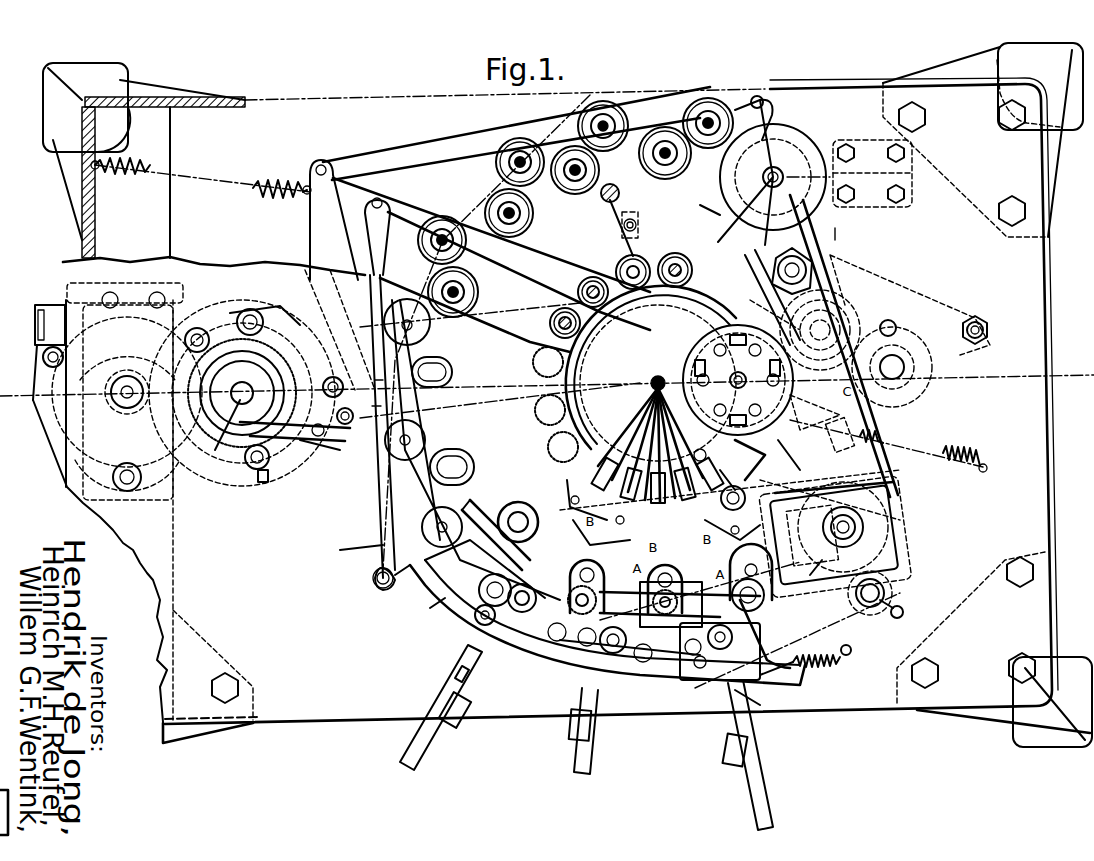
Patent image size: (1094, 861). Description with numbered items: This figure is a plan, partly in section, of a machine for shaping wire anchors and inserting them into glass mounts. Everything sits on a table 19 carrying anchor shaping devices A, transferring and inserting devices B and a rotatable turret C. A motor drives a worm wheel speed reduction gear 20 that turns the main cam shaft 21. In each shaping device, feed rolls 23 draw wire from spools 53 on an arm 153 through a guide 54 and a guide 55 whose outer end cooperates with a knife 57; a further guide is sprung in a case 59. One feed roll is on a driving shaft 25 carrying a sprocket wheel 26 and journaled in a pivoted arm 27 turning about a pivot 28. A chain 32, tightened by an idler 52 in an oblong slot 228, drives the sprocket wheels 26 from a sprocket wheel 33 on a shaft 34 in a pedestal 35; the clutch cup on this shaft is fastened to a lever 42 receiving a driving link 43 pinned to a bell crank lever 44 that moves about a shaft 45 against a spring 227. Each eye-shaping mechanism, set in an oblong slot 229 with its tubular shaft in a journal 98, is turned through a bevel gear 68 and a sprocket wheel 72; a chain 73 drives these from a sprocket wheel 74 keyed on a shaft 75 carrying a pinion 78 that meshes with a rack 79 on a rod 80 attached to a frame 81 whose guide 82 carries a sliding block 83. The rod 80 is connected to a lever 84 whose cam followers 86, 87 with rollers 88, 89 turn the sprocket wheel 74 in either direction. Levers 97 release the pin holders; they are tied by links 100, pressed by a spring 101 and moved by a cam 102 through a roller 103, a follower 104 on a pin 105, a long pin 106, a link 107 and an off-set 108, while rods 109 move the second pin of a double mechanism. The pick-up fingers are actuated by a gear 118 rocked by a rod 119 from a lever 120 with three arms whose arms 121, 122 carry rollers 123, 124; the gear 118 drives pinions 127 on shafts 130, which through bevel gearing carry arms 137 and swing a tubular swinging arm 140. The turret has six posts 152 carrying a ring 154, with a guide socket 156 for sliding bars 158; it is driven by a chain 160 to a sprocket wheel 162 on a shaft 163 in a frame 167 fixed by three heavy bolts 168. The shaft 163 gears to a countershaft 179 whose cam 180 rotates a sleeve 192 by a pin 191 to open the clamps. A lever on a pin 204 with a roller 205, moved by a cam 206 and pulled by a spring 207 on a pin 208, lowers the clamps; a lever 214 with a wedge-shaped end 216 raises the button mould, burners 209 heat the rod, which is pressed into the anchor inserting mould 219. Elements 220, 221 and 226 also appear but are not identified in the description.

The table 19 is at (1046, 278).
The worm wheel speed reduction gear 20 is at (203, 303).
The cam shaft 21 is at (219, 432).
The feed rolls 23 is at (760, 670).
The driving shaft 25 is at (445, 232).
The sprocket wheel 26 is at (612, 112).
The pivoted arm 27 is at (466, 616).
The pivot 28 is at (585, 675).
The chain 32 is at (458, 197).
The sprocket wheel 33 is at (727, 199).
The shaft 34 is at (707, 201).
The pedestal 35 is at (885, 207).
The lever 42 is at (778, 165).
The driving link 43 is at (410, 145).
The bell crank lever 44 is at (309, 229).
The shaft 45 is at (335, 376).
The idler 52 is at (886, 594).
The spools 53 is at (412, 760).
The guide 54 is at (638, 682).
The guide 55 is at (680, 603).
The knife 57 is at (472, 500).
The case 59 is at (604, 584).
The bevel gear 68 is at (520, 510).
The sprocket wheel 72 is at (672, 165).
The chain 73 is at (522, 175).
The sprocket wheel 74 is at (893, 532).
The shaft 75 is at (865, 525).
The pinion 78 is at (893, 508).
The rack 79 is at (798, 526).
The rod 80 is at (730, 512).
The frame 81 is at (780, 592).
The guide 82 is at (841, 527).
The sliding block 83 is at (812, 573).
The lever 84 is at (351, 551).
The cam follower 86 is at (283, 305).
The cam follower 87 is at (260, 463).
The roller 88 is at (295, 420).
The roller 89 is at (230, 333).
The lever 97 is at (770, 620).
The journal 98 is at (684, 590).
The links 100 is at (385, 512).
The spring 101 is at (835, 665).
The cam 102 is at (240, 405).
The roller 103 is at (248, 430).
The follower 104 is at (315, 436).
The pin 105 is at (340, 426).
The long pin 106 is at (338, 452).
The link 107 is at (389, 404).
The off-set 108 is at (391, 377).
The rods 109 is at (455, 605).
The gear 118 is at (634, 374).
The rod 119 is at (556, 257).
The lever with three arms 120 is at (383, 262).
The arm 121 is at (250, 308).
The arm 122 is at (258, 470).
The roller 123 is at (242, 393).
The roller 124 is at (268, 484).
The pinions 127 is at (550, 322).
The shafts 130 is at (563, 310).
The arms 137 is at (698, 447).
The tubular swinging arm 140 is at (750, 697).
The posts 152 is at (668, 361).
The arm 153 is at (448, 724).
The ring 154 is at (657, 345).
The guide socket 156 is at (793, 383).
The sliding bars 158 is at (753, 460).
The chain 160 is at (472, 450).
The sprocket wheel 162 is at (824, 328).
The shaft 163 is at (830, 300).
The frame 167 is at (612, 252).
The heavy bolts 168 is at (603, 198).
The countershaft 179 is at (905, 367).
The cam 180 is at (915, 352).
The pin 191 is at (890, 320).
The sleeve 192 is at (915, 322).
The pin 204 is at (838, 443).
The roller 205 is at (817, 412).
The cam 206 is at (880, 270).
The spring 207 is at (960, 468).
The pin 208 is at (988, 468).
The burners 209 is at (830, 496).
The lever 214 is at (796, 455).
The wedge-shaped end 216 is at (735, 480).
The anchor inserting mould 219 is at (657, 432).
The lever 220 is at (770, 297).
The link 221 is at (775, 314).
The gear 226 is at (783, 258).
The spring 227 is at (266, 186).
The oblong slot 228 is at (903, 614).
The oblong slot 229 is at (452, 372).